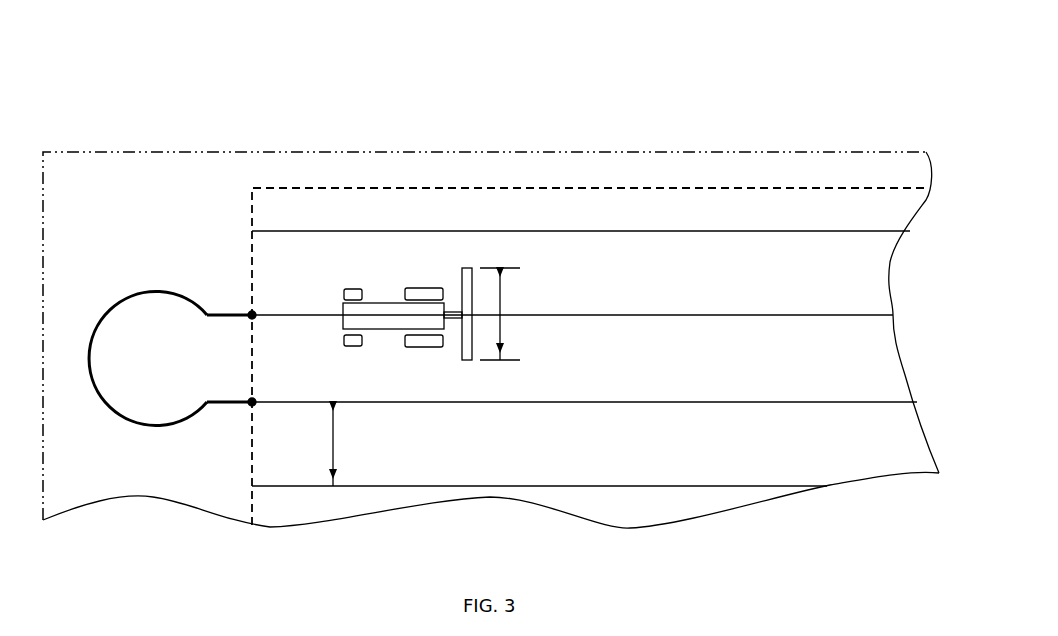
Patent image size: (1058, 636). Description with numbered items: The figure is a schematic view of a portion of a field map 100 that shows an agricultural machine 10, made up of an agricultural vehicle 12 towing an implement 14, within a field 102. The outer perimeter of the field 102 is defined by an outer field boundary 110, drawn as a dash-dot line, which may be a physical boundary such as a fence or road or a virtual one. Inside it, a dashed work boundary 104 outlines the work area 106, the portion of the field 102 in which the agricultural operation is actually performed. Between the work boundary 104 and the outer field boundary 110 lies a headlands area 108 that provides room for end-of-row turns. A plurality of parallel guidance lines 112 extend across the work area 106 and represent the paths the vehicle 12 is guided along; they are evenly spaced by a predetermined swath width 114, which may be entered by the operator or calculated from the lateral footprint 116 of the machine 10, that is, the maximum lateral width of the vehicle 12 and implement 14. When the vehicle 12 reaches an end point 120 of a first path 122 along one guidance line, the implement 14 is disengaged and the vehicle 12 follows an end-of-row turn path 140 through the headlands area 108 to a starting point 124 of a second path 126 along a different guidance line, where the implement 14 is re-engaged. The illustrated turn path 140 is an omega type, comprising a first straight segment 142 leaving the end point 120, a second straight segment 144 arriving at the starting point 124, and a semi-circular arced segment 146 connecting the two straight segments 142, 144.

The field map 100 is at (218, 80).
The field 102 is at (259, 149).
The work boundary 104 is at (559, 187).
The work area 106 is at (678, 452).
The headlands area 108 is at (133, 214).
The outer field boundary 110 is at (412, 152).
The guidance lines 112 is at (886, 231).
The swath width 114 is at (335, 433).
The lateral footprint 116 is at (503, 333).
The end point 120 is at (254, 312).
The first path 122 is at (737, 315).
The starting point 124 is at (254, 405).
The second path 126 is at (777, 402).
The end-of-row turn path 140 is at (152, 345).
The first straight segment 142 is at (238, 312).
The second straight segment 144 is at (238, 405).
The arced segment 146 is at (108, 405).
The agricultural machine 10 is at (378, 279).
The agricultural vehicle 12 is at (392, 325).
The implement 14 is at (467, 343).